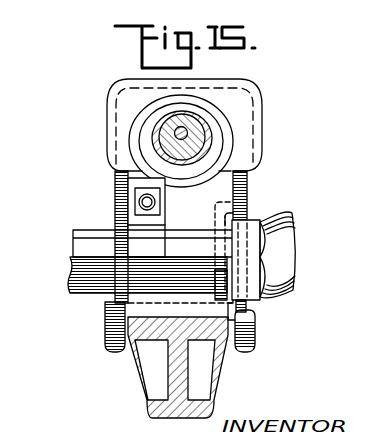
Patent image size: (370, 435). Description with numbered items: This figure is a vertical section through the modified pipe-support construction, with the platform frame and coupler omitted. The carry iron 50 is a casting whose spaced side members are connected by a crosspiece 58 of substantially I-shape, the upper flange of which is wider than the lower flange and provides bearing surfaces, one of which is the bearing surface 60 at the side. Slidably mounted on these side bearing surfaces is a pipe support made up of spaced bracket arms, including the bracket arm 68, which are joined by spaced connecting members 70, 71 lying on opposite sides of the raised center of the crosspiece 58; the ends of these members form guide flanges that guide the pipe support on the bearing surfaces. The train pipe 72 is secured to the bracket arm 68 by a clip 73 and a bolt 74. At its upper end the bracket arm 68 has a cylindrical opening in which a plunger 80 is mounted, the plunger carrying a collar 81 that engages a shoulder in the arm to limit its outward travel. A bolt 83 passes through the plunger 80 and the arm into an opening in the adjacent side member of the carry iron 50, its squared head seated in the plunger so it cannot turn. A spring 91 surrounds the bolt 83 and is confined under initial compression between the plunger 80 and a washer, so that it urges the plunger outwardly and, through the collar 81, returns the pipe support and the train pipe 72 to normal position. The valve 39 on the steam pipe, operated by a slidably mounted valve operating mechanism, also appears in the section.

The valve 39 is at (280, 260).
The carry iron 50 is at (147, 405).
The crosspiece 58 is at (188, 380).
The bearing surface 60 is at (256, 333).
The bracket arm 68 is at (242, 173).
The connecting member 70 is at (255, 349).
The connecting member 71 is at (108, 340).
The train pipe 72 is at (98, 252).
The clip 73 is at (127, 218).
The bolt 74 is at (142, 202).
The plunger 80 is at (145, 113).
The collar 81 is at (130, 138).
The bolt 83 is at (202, 123).
The spring 91 is at (210, 137).